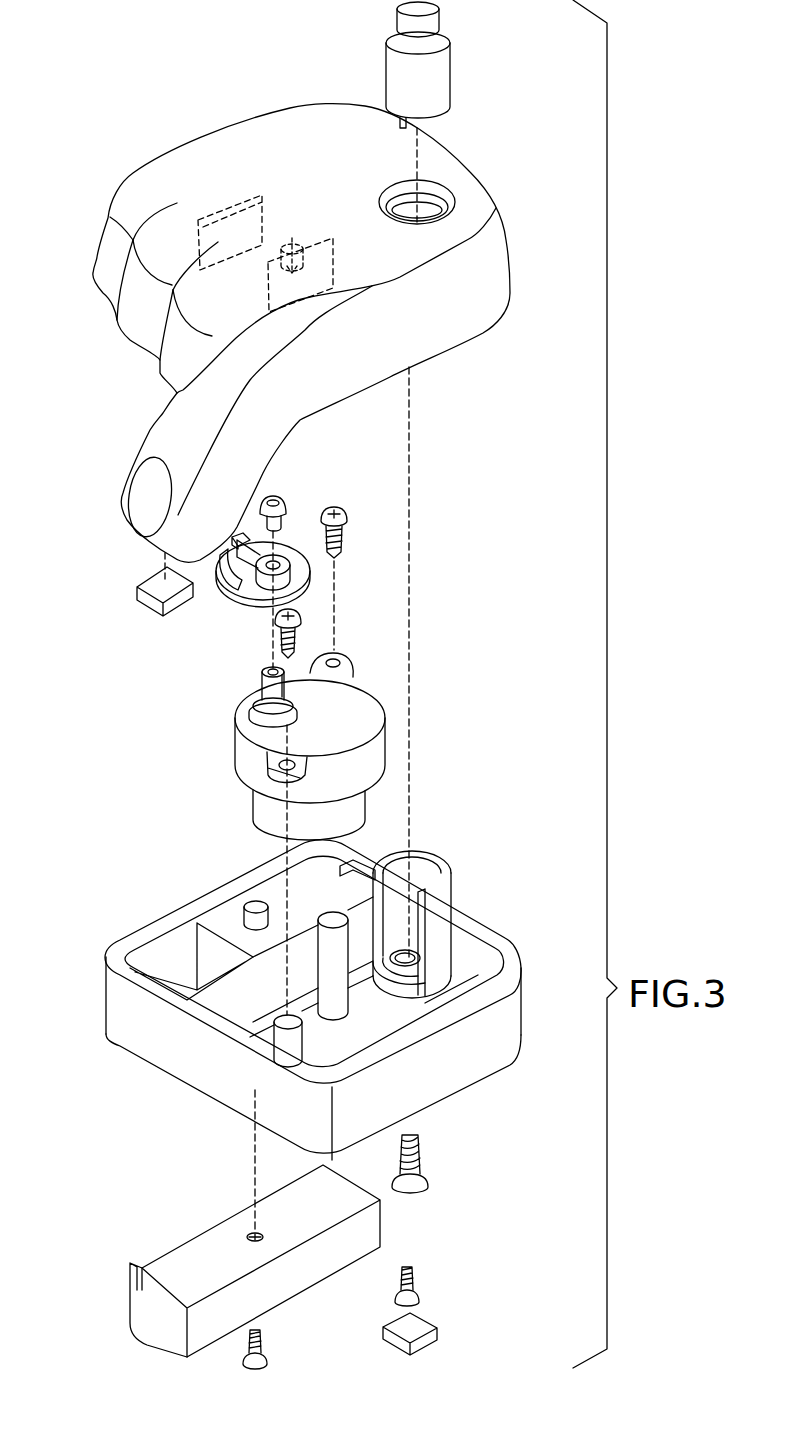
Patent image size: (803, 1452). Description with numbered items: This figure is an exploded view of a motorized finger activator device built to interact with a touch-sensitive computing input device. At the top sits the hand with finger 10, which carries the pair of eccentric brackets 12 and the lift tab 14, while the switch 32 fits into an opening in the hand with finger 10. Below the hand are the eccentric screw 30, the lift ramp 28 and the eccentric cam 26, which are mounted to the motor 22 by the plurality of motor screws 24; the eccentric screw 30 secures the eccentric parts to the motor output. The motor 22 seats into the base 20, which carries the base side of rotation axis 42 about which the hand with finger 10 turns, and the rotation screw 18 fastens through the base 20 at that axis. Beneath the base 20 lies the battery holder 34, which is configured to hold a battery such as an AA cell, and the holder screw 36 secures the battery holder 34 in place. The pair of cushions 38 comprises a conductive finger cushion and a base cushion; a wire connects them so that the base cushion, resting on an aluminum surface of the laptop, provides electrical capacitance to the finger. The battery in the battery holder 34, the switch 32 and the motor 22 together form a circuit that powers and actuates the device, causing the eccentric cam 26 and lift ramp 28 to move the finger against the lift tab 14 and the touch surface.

The hand with finger 10 is at (150, 187).
The pair of eccentric brackets 12 is at (198, 240).
The lift tab 14 is at (283, 247).
The rotation screw 18 is at (428, 1187).
The base 20 is at (482, 1052).
The motor 22 is at (248, 768).
The motor screws 24 is at (346, 520).
The eccentric cam 26 is at (258, 602).
The lift ramp 28 is at (233, 560).
The eccentric screw 30 is at (288, 507).
The switch 32 is at (433, 73).
The battery holder 34 is at (178, 1262).
The holder screw 36 is at (267, 1362).
The pair of cushions 38 is at (150, 583).
The base side of rotation axis 42 is at (437, 900).